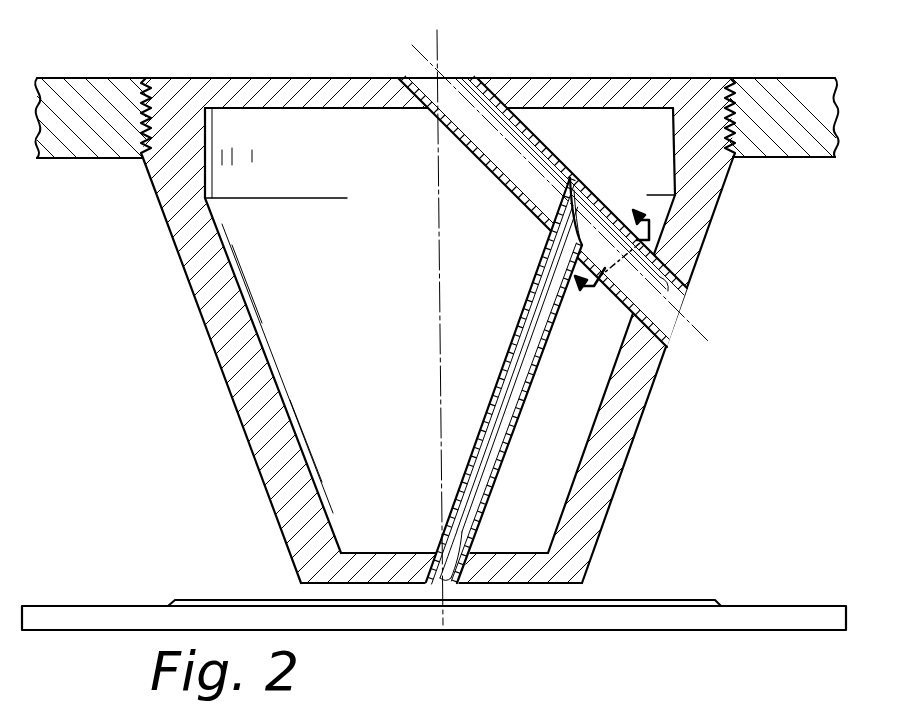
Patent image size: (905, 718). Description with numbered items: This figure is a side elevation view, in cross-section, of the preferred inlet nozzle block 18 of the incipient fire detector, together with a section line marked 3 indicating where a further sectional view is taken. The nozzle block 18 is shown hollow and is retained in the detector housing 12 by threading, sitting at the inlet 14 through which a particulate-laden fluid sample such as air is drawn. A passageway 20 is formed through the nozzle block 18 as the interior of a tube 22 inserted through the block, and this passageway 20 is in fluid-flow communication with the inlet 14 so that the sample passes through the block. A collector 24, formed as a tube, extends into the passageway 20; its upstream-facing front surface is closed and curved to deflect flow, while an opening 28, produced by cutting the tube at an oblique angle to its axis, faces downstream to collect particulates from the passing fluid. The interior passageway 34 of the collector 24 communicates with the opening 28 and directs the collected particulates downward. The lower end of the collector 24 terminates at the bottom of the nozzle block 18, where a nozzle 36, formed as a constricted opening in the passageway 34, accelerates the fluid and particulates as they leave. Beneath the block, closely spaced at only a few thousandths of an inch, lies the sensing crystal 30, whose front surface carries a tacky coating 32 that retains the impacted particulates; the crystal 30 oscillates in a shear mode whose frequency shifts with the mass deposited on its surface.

The housing 12 is at (97, 93).
The inlet 14 is at (442, 72).
The nozzle block 18 is at (708, 103).
The passageway 20 is at (690, 293).
The tube 22 is at (528, 118).
The collector 24 is at (552, 202).
The opening 28 is at (583, 197).
The passageway 34 is at (530, 343).
The nozzle 36 is at (452, 528).
The sensing crystal 30 is at (763, 615).
The tacky coating 32 is at (655, 601).
The section line 3- 3 is at (609, 255).